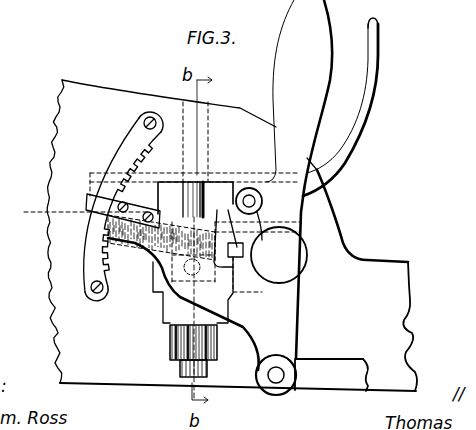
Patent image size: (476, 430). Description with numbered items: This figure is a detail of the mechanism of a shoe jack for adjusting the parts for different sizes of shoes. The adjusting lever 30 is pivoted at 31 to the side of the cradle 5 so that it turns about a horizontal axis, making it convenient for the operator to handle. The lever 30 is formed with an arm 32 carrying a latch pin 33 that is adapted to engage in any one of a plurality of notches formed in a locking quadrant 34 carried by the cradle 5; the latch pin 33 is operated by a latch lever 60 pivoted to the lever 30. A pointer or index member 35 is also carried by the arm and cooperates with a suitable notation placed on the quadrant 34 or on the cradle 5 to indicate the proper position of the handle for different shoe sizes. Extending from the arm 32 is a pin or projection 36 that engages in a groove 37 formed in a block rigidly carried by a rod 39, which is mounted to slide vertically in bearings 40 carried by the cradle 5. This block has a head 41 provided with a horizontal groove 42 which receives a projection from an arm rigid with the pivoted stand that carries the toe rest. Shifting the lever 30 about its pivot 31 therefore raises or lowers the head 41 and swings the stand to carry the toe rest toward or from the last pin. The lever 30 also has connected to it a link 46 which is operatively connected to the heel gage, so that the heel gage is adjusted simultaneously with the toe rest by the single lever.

The cradle 5 is at (104, 106).
The adjusting lever 30 is at (300, 77).
The latch lever 60 is at (362, 118).
The locking quadrant 34 is at (128, 135).
The head 41 is at (90, 172).
The pointer or index member 35 is at (108, 196).
The horizontal groove 42 is at (75, 211).
The latch pin 33 is at (108, 228).
The arm 32 is at (142, 250).
The groove 37 is at (163, 275).
The pin or projection 36 is at (168, 300).
The bearings 40 is at (183, 353).
The rod 39 is at (203, 193).
The pivot 31 is at (284, 252).
The link 46 is at (334, 365).